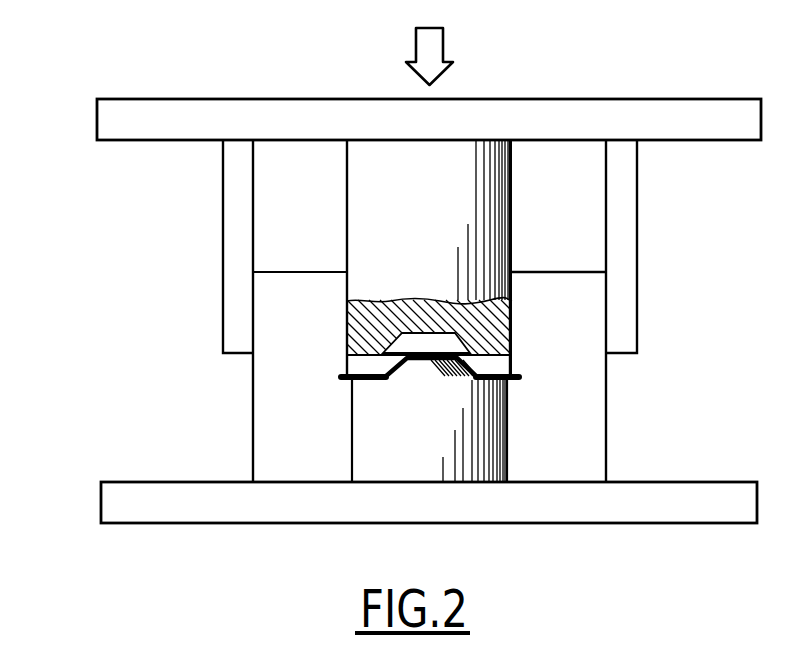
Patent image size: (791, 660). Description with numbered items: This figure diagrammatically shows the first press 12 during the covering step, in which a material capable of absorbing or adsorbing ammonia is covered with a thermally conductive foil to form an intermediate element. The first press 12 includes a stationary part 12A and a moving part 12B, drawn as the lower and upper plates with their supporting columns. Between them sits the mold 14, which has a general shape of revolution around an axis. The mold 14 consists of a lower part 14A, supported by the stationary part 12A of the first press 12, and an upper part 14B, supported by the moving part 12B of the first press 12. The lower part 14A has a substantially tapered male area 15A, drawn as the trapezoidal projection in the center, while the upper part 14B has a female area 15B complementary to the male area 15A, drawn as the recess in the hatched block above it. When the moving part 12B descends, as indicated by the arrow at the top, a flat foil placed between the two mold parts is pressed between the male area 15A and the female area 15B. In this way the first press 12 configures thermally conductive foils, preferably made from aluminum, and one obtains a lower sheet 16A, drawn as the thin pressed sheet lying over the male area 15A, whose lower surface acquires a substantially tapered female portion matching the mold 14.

The first press 12 is at (168, 272).
The stationary part 12A is at (595, 420).
The moving part 12B is at (622, 197).
The mold 14 is at (326, 365).
The lower part 14A is at (366, 430).
The upper part 14B is at (367, 322).
The male area 15A is at (427, 372).
The female area 15B is at (456, 343).
The lower sheet 16A is at (492, 376).